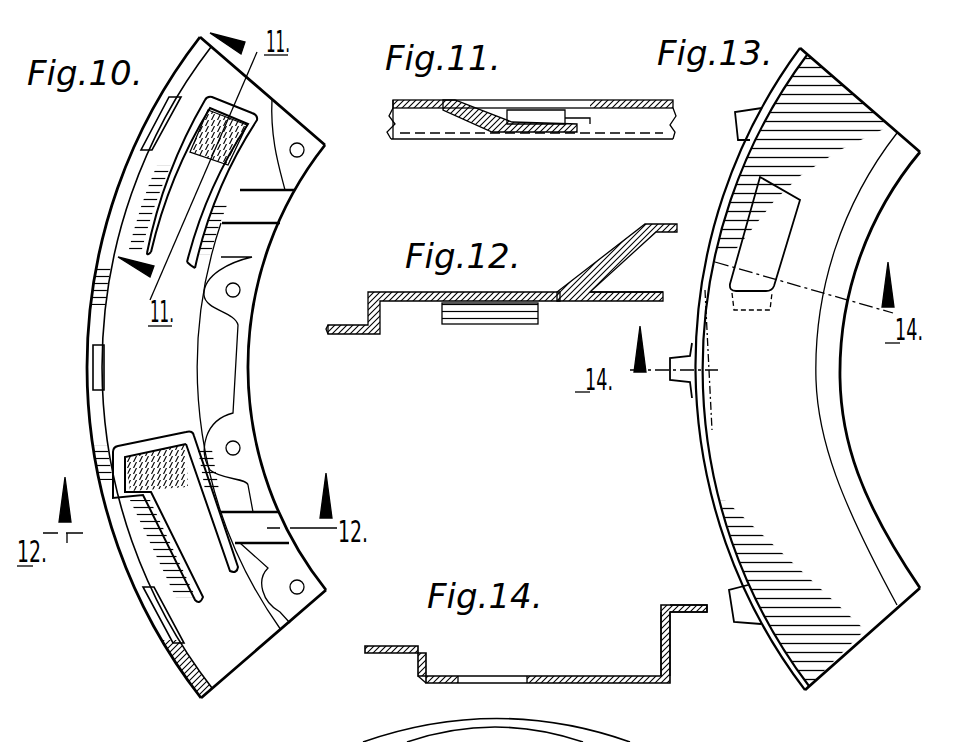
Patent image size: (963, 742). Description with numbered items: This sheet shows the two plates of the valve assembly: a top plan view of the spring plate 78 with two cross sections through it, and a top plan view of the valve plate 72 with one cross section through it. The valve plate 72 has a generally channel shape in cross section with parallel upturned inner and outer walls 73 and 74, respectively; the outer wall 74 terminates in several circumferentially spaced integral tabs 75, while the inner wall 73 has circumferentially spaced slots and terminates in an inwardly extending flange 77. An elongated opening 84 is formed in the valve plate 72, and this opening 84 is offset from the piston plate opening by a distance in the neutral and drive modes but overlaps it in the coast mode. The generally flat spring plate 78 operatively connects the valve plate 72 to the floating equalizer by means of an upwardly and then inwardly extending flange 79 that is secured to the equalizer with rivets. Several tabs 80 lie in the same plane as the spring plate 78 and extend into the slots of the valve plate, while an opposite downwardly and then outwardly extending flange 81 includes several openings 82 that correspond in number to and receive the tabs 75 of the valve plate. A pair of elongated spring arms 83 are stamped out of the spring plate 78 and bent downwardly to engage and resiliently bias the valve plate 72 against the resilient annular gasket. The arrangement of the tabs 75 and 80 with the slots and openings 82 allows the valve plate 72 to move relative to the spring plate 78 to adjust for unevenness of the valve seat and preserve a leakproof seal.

In FIG. 13, the valve plate 72 is at (770, 441).
In FIG. 14, the valve plate 72 is at (616, 684).
In FIG. 14, the inner wall 73 is at (672, 640).
In FIG. 14, the outer wall 74 is at (415, 661).
In FIG. 13, the tabs 75 is at (746, 126).
In FIG. 14, the tabs 75 is at (408, 612).
In FIG. 13, the inwardly extending flange 77 is at (847, 478).
In FIG. 14, the inwardly extending flange 77 is at (683, 606).
In FIG. 10, the spring plate 78 is at (162, 395).
In FIG. 11, the spring plate 78 is at (625, 100).
In FIG. 12, the spring plate 78 is at (563, 291).
In FIG. 10, the flange 79 is at (244, 361).
In FIG. 12, the flange 79 is at (663, 222).
In FIG. 10, the tabs 80 is at (284, 207).
In FIG. 12, the tabs 80 is at (614, 301).
In FIG. 10, the flange 81 is at (100, 253).
In FIG. 11, the flange 81 is at (412, 139).
In FIG. 12, the flange 81 is at (337, 336).
In FIG. 10, the openings 82 is at (157, 127).
In FIG. 11, the openings 82 is at (540, 124).
In FIG. 10, the spring arms 83 is at (192, 231).
In FIG. 11, the spring arms 83 is at (492, 124).
In FIG. 12, the spring arms 83 is at (480, 324).
In FIG. 13, the elongated opening 84 is at (782, 222).
In FIG. 14, the elongated opening 84 is at (527, 650).